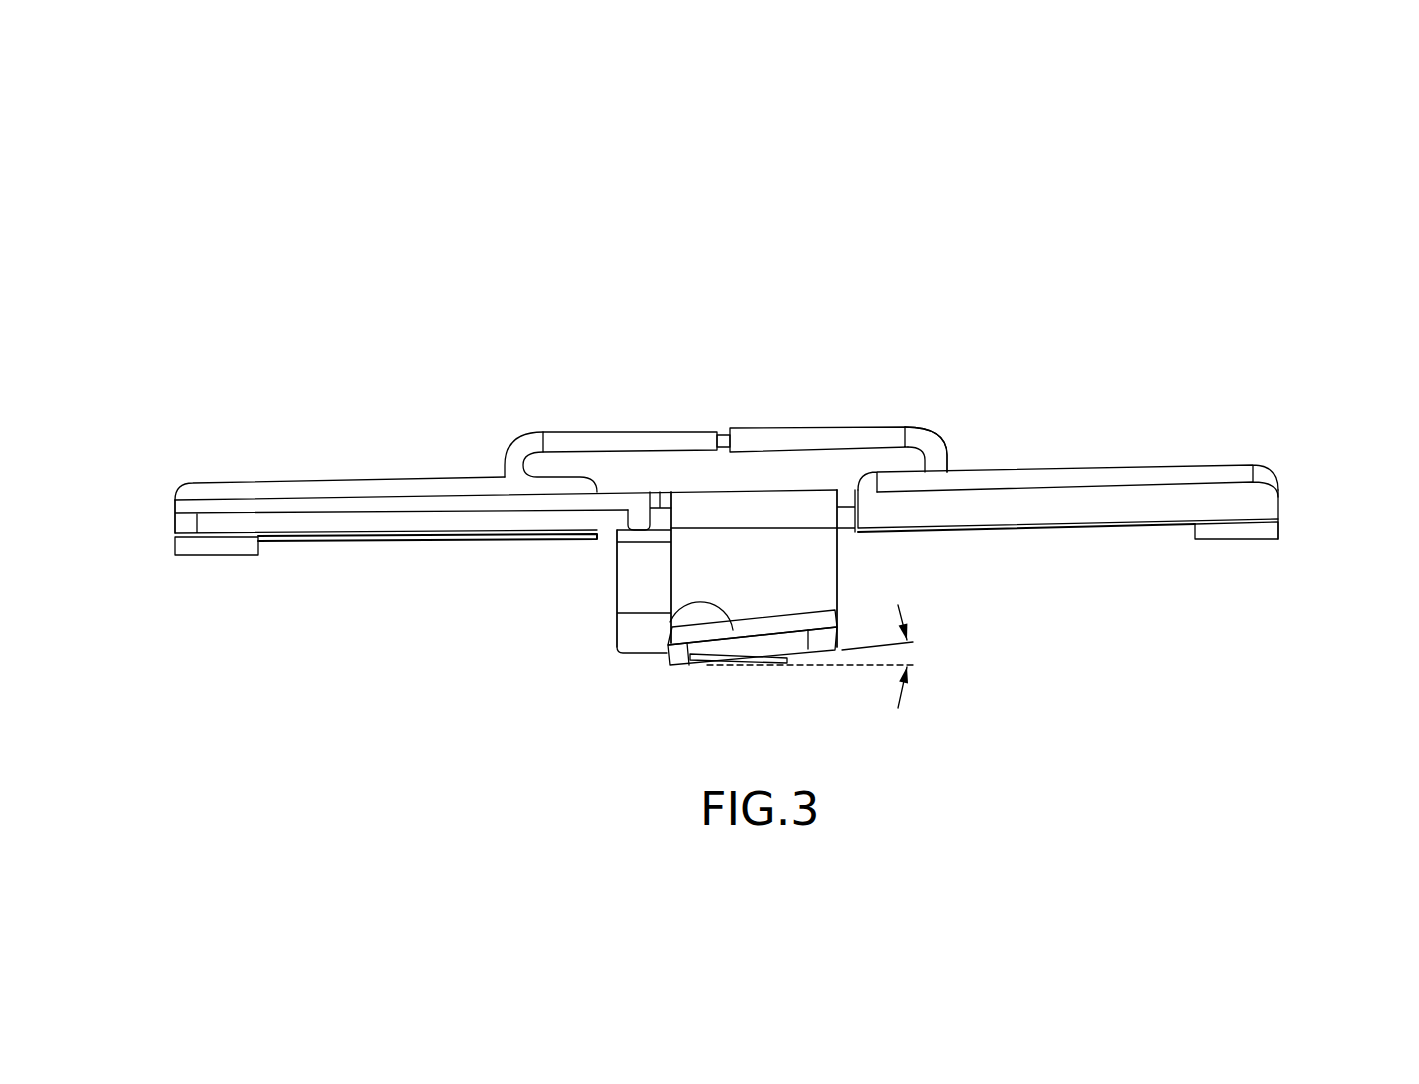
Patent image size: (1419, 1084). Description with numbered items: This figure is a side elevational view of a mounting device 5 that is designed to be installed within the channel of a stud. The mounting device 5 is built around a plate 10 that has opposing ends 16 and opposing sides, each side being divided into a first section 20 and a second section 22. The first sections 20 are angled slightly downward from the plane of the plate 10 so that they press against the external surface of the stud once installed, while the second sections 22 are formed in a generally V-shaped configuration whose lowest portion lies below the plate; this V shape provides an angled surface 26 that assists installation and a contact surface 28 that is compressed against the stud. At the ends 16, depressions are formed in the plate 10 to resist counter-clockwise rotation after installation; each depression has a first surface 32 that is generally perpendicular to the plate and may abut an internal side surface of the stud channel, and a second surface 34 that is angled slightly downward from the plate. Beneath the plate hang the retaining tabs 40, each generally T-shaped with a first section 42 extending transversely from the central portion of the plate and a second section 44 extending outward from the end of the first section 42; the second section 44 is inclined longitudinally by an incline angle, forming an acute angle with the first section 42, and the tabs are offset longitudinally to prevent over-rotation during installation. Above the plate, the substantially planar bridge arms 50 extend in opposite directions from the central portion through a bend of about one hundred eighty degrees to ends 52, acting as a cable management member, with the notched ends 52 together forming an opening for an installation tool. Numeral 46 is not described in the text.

The mounting device 5 is at (948, 388).
The plate 10 is at (240, 497).
The opposing ends 16 is at (175, 525).
The first section 20 is at (352, 507).
The second section 22 is at (1087, 470).
The angled surface 26 is at (1152, 503).
The contact surface 28 is at (420, 542).
The first surface 32 is at (237, 547).
The second surface 34 is at (1233, 530).
The retaining tab 40 is at (587, 568).
The first section 42 is at (645, 582).
The second section 44 is at (780, 633).
The dimple 46 is at (690, 602).
The bridge arm 50 is at (592, 418).
The ends 52 is at (710, 432).